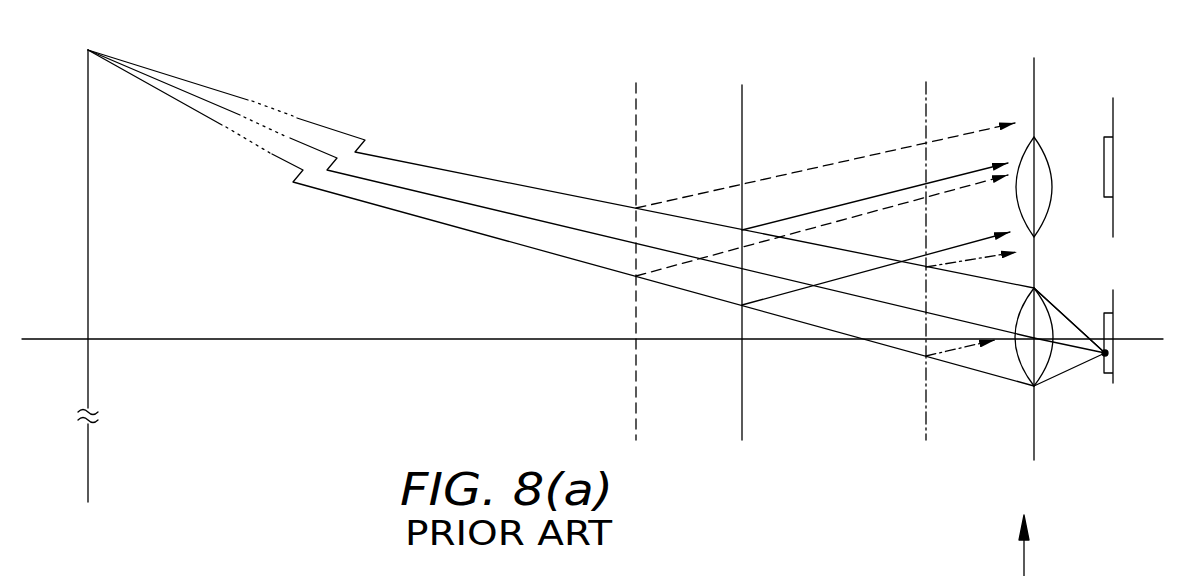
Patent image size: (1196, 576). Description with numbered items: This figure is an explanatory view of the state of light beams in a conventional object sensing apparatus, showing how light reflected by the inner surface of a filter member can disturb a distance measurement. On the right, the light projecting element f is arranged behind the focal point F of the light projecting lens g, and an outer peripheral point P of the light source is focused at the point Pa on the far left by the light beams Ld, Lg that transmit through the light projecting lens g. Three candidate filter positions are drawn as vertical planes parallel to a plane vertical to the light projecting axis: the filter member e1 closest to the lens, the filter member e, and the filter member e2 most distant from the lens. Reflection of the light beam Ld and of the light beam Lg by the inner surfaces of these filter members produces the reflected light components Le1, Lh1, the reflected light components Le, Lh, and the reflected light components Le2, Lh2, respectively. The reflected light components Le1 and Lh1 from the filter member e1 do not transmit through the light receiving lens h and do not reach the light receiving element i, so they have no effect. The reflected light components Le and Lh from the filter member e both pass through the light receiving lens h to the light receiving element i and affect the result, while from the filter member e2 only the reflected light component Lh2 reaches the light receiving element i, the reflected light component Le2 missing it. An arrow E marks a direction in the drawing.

The focused point Pa is at (70, 268).
The light beam Ld is at (441, 167).
The light beam Lg is at (433, 222).
The filter member e2 is at (634, 105).
The filter member e is at (741, 100).
The filter member e1 is at (924, 118).
The reflected light component Le2 is at (672, 197).
The reflected light component Le is at (796, 218).
The reflected light component Le1 is at (971, 260).
The reflected light component Lh2 is at (678, 270).
The reflected light component Lh is at (786, 297).
The reflected light component Lh1 is at (960, 349).
The light receiving lens h is at (1042, 148).
The light receiving element i is at (1113, 152).
The light projecting lens g is at (1050, 363).
The focal point F is at (1100, 332).
The light projecting element f is at (1113, 323).
The outer peripheral point P is at (1105, 353).
The direction E is at (1035, 545).